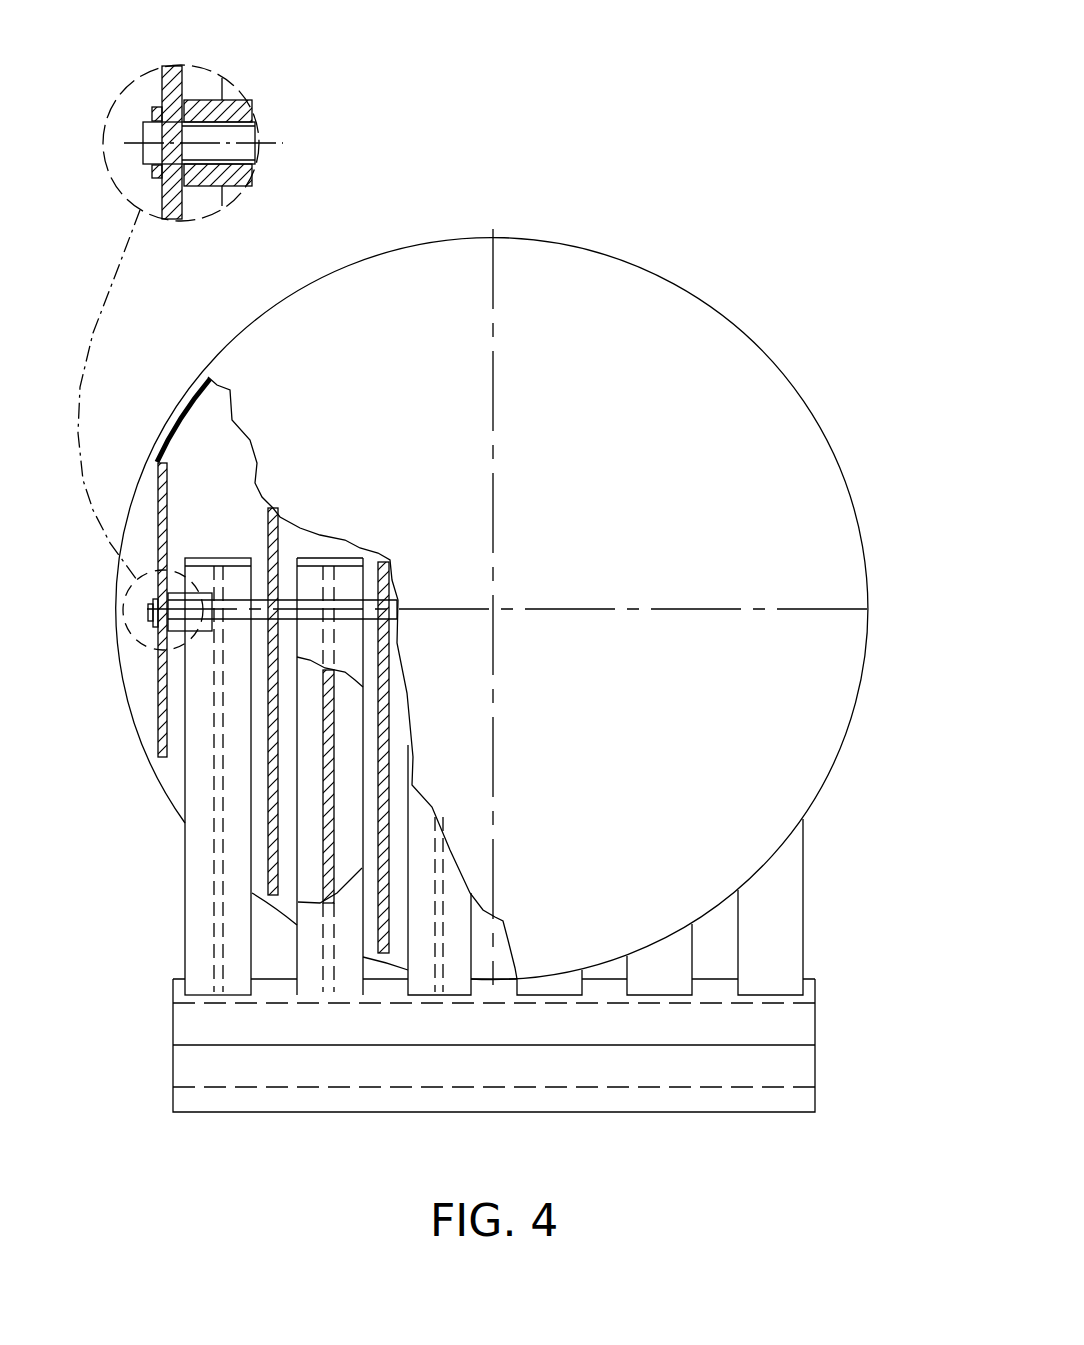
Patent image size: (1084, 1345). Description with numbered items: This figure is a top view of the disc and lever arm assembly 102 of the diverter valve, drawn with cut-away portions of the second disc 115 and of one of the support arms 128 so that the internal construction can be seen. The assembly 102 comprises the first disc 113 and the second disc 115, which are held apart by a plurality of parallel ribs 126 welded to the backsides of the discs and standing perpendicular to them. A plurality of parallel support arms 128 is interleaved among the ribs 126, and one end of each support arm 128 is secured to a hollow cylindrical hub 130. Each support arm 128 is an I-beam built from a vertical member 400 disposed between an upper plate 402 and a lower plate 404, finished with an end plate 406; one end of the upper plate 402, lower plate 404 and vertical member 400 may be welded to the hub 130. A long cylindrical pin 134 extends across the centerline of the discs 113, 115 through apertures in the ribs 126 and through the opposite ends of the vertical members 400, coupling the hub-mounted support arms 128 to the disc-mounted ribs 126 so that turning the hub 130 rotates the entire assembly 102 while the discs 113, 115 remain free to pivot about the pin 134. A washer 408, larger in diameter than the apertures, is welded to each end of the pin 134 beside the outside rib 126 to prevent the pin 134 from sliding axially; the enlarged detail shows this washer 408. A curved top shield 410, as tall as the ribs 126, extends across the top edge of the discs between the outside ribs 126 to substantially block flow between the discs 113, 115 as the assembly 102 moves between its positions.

The disc and lever arm assembly 102 is at (500, 576).
The first disc 113 is at (134, 667).
The second disc 115 is at (758, 368).
The rib 126 is at (165, 476).
The support arm 128 is at (325, 553).
The hub 130 is at (805, 1096).
The pin 134 is at (368, 603).
The vertical member 400 is at (330, 740).
The upper plate 402 is at (348, 640).
The lower plate 404 is at (353, 830).
The end plate 406 is at (361, 562).
The washer 408 is at (157, 109).
The top shield 410 is at (178, 413).